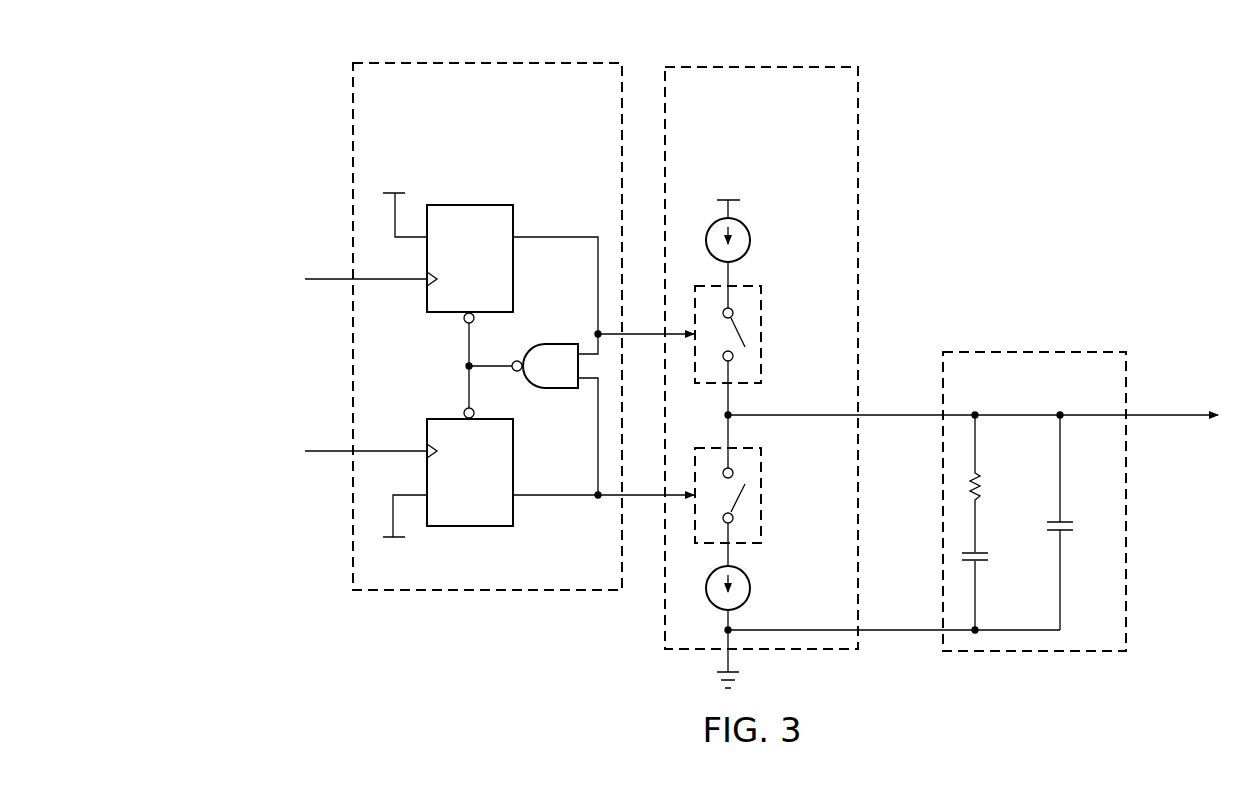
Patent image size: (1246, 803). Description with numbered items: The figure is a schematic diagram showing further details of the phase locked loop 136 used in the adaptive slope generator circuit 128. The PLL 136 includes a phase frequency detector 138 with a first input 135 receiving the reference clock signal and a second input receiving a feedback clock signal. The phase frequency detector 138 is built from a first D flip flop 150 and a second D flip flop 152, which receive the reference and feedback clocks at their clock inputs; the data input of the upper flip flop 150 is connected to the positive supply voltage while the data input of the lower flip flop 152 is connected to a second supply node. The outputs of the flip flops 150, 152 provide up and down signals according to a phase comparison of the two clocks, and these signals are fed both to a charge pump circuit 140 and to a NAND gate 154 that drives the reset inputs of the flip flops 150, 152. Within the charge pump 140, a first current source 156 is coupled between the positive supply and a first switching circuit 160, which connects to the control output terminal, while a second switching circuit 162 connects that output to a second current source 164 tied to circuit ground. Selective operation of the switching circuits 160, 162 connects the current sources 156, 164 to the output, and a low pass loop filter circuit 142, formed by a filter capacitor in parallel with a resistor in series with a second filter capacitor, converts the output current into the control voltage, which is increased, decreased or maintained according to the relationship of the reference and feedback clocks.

The phase-locked loop circuit 128 is at (1008, 90).
The first input 135 is at (332, 276).
The PLL 136 is at (304, 132).
The phase frequency detector 138 is at (486, 61).
The charge pump circuit 140 is at (778, 64).
The loop filter circuit 142 is at (1050, 348).
The first D flip flop 150 is at (460, 205).
The second D flip flop 152 is at (458, 527).
The NAND gate 154 is at (547, 344).
The first current source 156 is at (751, 243).
The first charge pump switching circuit 160 is at (766, 320).
The second switching circuit 162 is at (766, 508).
The second current source 164 is at (751, 590).